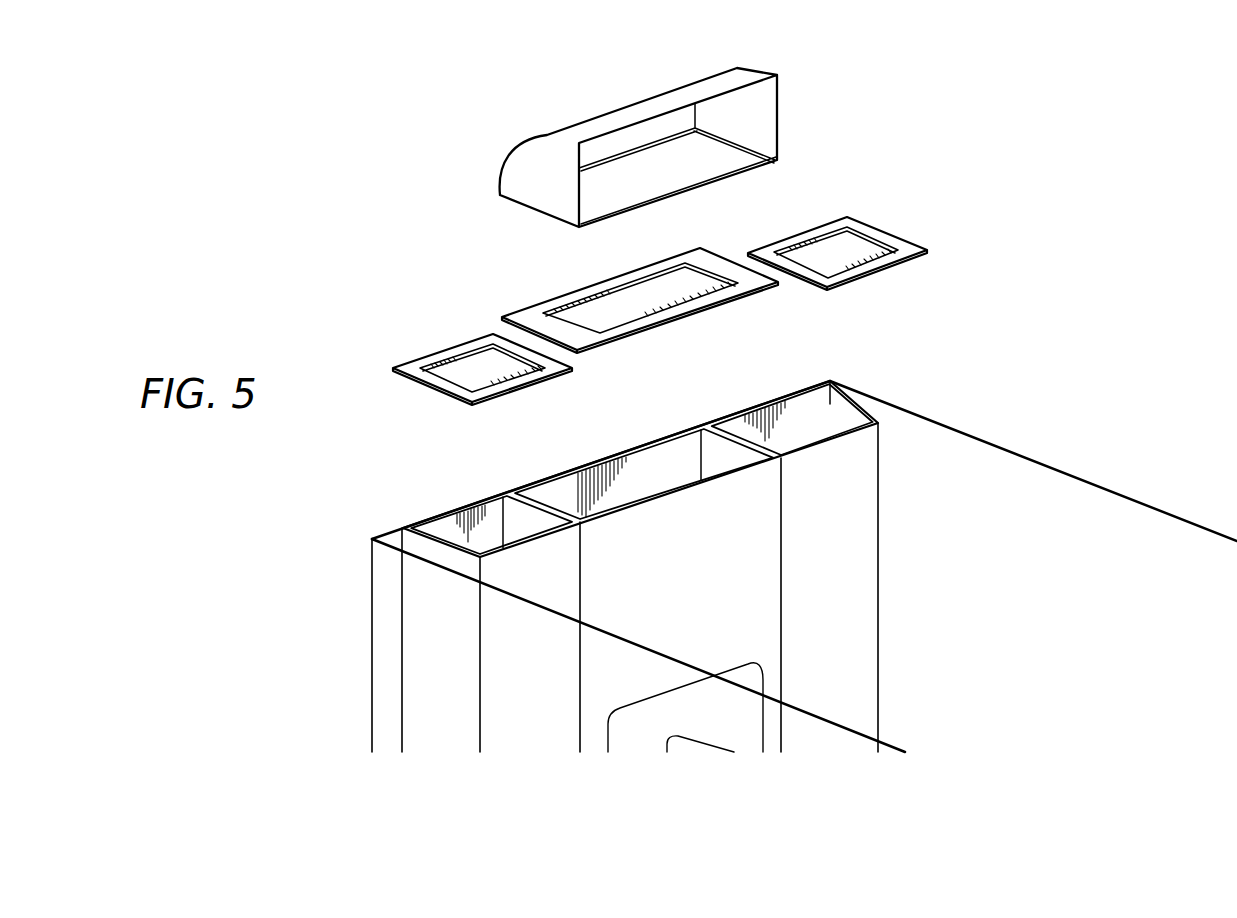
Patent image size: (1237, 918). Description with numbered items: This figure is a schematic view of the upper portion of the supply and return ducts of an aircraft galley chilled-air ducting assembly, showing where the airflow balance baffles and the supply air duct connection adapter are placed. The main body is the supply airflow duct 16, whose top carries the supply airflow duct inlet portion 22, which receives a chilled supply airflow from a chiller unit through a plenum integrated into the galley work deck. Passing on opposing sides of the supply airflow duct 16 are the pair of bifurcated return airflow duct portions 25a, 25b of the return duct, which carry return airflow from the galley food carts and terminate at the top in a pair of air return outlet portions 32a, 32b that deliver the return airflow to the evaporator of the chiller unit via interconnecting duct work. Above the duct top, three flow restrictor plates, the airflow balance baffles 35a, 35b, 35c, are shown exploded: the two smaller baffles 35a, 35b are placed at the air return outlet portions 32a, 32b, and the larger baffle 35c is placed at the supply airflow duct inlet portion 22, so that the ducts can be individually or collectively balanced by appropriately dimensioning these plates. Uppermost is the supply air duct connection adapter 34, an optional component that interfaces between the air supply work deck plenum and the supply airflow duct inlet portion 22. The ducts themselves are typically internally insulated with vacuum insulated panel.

The supply airflow duct 16 is at (741, 589).
The supply airflow duct inlet portion 22 is at (660, 468).
The bifurcated return airflow duct portion 25a is at (445, 689).
The bifurcated return airflow duct portion 25b is at (864, 467).
The air return outlet portion 32a is at (445, 515).
The air return outlet portion 32b is at (844, 416).
The supply air duct connection adapter 34 is at (777, 127).
The airflow balance baffle 35a is at (420, 358).
The airflow balance baffle 35b is at (872, 227).
The airflow balance baffle 35c is at (518, 312).